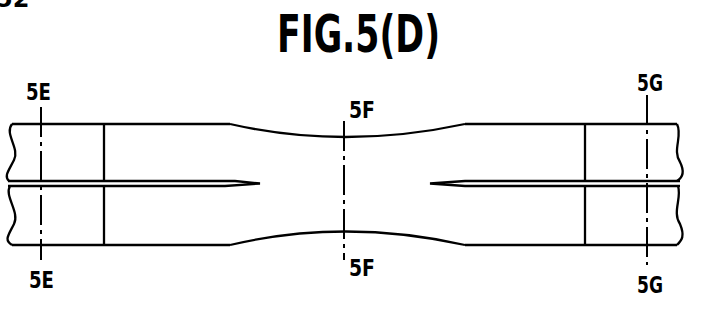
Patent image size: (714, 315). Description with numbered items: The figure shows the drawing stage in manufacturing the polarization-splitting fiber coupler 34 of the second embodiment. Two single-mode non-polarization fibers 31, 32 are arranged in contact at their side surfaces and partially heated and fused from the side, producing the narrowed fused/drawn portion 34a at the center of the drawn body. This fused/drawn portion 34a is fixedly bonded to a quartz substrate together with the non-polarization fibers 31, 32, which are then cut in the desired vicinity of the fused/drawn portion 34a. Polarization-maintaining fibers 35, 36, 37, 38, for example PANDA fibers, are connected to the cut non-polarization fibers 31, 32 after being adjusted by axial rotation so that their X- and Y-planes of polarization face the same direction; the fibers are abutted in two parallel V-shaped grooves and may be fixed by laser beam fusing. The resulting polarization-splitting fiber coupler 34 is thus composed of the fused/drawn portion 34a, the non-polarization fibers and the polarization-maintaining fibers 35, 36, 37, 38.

The non-polarization fiber 31 is at (172, 124).
The non-polarization fiber 32 is at (180, 247).
The polarization-splitting fiber coupler 34 is at (527, 108).
The fused/drawn portion 34a is at (306, 136).
The polarization-maintaining fiber 35 is at (68, 121).
The polarization-maintaining fiber 36 is at (82, 247).
The polarization-maintaining fiber 37 is at (600, 123).
The polarization-maintaining fiber 38 is at (600, 246).